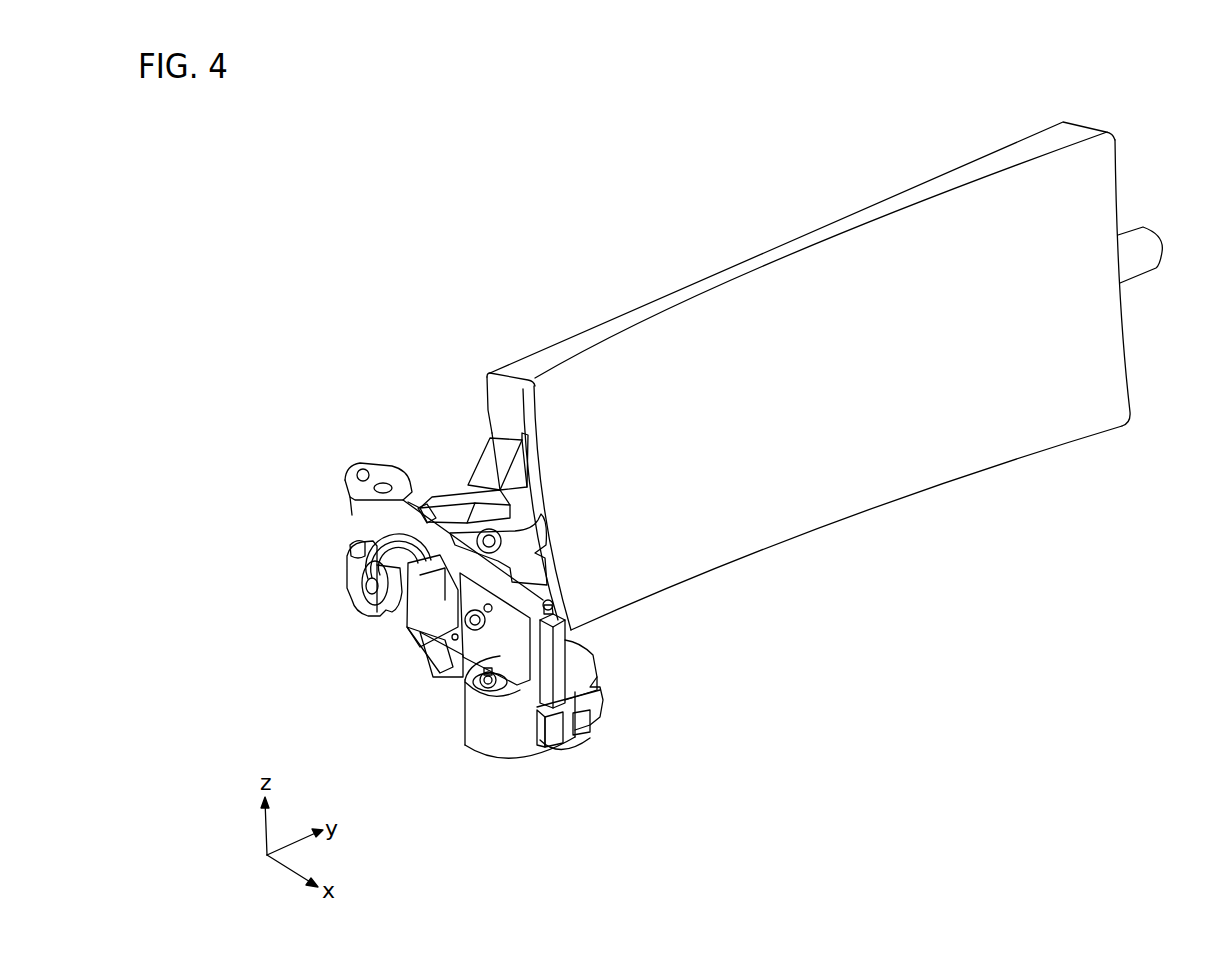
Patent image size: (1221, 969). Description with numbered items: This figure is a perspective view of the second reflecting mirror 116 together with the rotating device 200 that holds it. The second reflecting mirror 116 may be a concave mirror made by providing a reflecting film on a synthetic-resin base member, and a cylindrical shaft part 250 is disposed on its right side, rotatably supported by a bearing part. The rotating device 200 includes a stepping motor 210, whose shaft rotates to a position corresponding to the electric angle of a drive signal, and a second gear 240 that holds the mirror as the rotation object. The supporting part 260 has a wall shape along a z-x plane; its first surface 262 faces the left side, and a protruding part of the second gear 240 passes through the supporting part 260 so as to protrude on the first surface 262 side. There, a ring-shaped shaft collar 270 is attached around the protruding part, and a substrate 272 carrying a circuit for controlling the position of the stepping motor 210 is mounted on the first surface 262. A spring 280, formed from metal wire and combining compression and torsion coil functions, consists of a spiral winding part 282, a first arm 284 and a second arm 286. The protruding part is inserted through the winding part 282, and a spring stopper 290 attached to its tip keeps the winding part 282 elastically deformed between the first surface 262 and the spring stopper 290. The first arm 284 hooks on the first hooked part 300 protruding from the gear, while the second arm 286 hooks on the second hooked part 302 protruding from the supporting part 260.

The second reflecting mirror 116 is at (858, 240).
The shaft part 250 is at (1143, 227).
The second gear 240 is at (508, 518).
The rotating device 200 is at (507, 780).
The second hooked part 302 is at (363, 472).
The second arm 286 is at (426, 504).
The first surface 262 is at (367, 513).
The shaft collar 270 is at (360, 532).
The spring 280 is at (390, 558).
The spring stopper 290 is at (367, 608).
The winding part 282 is at (407, 628).
The first hooked part 300 is at (418, 647).
The first arm 284 is at (440, 653).
The substrate 272 is at (517, 655).
The stepping motor 210 is at (483, 742).
The supporting part 260 is at (602, 690).